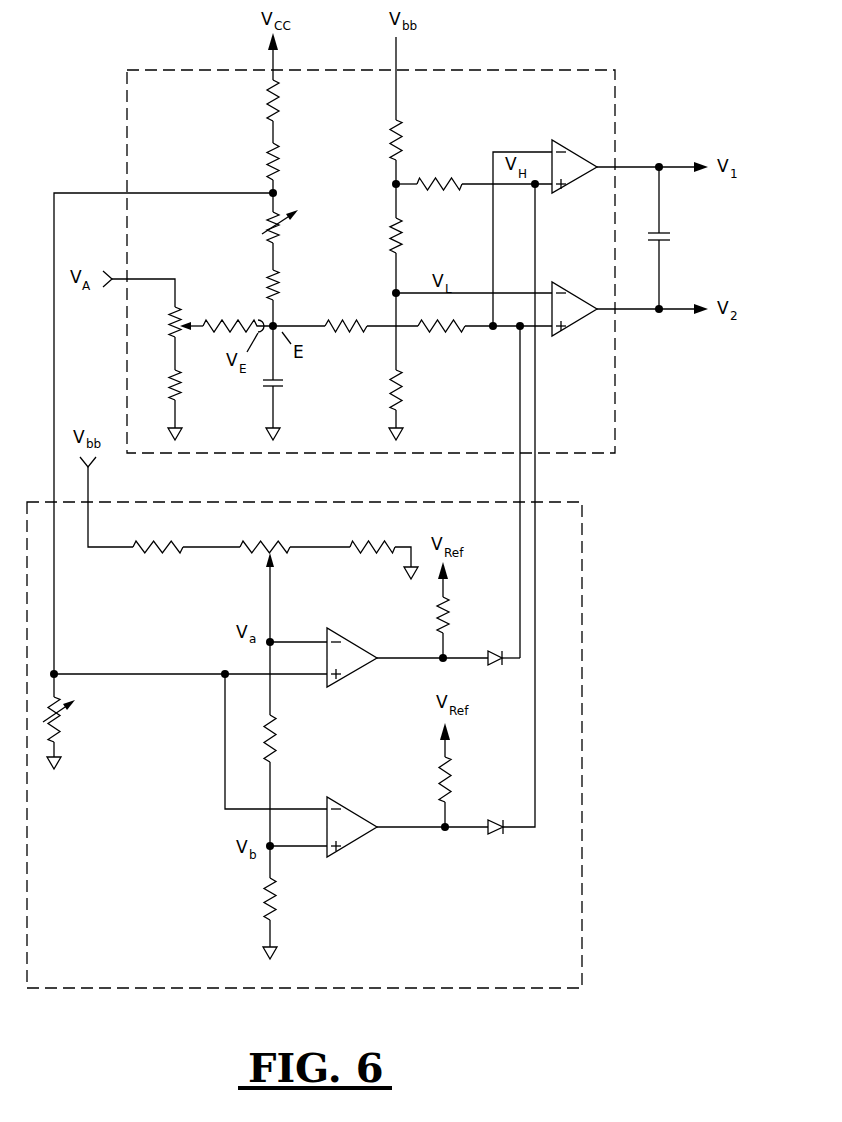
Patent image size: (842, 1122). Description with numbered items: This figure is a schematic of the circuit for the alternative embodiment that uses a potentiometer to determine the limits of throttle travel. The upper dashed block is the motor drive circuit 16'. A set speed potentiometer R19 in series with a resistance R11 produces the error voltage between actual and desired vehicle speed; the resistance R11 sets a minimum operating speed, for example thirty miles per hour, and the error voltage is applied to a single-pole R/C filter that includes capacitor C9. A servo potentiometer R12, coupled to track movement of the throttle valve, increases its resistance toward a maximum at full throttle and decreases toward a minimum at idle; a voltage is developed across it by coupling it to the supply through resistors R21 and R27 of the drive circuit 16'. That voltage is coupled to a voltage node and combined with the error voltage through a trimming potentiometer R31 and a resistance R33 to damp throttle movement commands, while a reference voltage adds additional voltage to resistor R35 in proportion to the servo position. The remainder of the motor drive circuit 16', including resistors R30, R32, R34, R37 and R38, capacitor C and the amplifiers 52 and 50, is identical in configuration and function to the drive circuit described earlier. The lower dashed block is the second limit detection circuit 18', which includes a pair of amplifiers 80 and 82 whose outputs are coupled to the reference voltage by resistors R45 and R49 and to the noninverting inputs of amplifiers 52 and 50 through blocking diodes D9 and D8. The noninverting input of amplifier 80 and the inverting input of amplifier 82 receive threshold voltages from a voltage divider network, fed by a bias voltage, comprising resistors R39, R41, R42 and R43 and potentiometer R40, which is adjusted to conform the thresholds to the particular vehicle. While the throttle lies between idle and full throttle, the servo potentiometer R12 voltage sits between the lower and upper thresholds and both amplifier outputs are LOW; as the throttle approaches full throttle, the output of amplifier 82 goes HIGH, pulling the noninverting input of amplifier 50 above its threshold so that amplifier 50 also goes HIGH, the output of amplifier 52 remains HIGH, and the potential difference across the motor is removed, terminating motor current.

The motor drive circuit 16' is at (400, 233).
The second limit detection circuit 18' is at (352, 745).
The amplifier 52 is at (583, 157).
The amplifier 50 is at (581, 298).
The amplifier 82 is at (355, 645).
The amplifier 80 is at (362, 818).
The resistor R21 is at (279, 92).
The resistor R27 is at (279, 152).
The trimming potentiometer R31 is at (284, 240).
The resistance R33 is at (279, 280).
The set speed potentiometer R19 is at (170, 326).
The resistance R11 is at (170, 384).
The capacitor C9 is at (284, 384).
The resistor R30 is at (402, 128).
The resistor R32 is at (442, 174).
The resistor R34 is at (400, 252).
The resistor R35 is at (351, 314).
The resistor R38 is at (449, 314).
The resistor R37 is at (402, 384).
The capacitor C is at (672, 240).
The resistor R39 is at (156, 543).
The potentiometer R40 is at (266, 543).
The resistor R41 is at (375, 543).
The resistor R49 is at (447, 630).
The blocking diode D8 is at (494, 650).
The resistor R42 is at (276, 747).
The resistor R43 is at (276, 907).
The resistor R45 is at (449, 797).
The blocking diode D9 is at (496, 813).
The servo potentiometer R12 is at (64, 726).